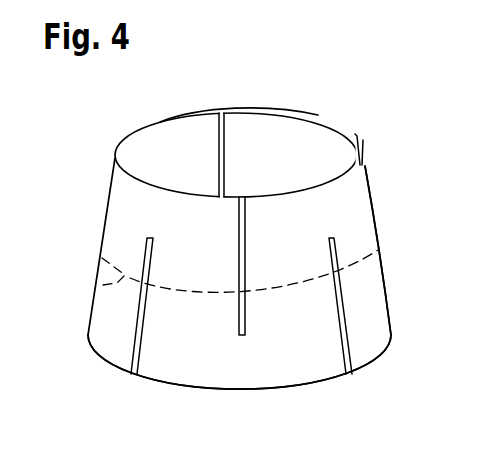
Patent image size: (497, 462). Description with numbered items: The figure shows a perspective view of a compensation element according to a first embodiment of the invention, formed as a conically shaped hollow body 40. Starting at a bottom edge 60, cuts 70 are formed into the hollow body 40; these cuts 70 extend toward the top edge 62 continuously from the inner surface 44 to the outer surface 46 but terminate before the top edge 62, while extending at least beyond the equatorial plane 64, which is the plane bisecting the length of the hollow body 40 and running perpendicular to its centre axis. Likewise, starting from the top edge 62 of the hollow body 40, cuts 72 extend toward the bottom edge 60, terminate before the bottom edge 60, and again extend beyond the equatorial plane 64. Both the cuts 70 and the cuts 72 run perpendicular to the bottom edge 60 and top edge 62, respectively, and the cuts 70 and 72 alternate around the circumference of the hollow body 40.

The conically shaped hollow body 40 is at (388, 278).
The inner surface 44 is at (259, 128).
The outer surface 46 is at (350, 207).
The bottom edge 60 is at (217, 388).
The top edge 62 is at (317, 115).
The equatorial plane 64 is at (100, 276).
The cuts 70 is at (132, 375).
The cuts 72 is at (222, 112).